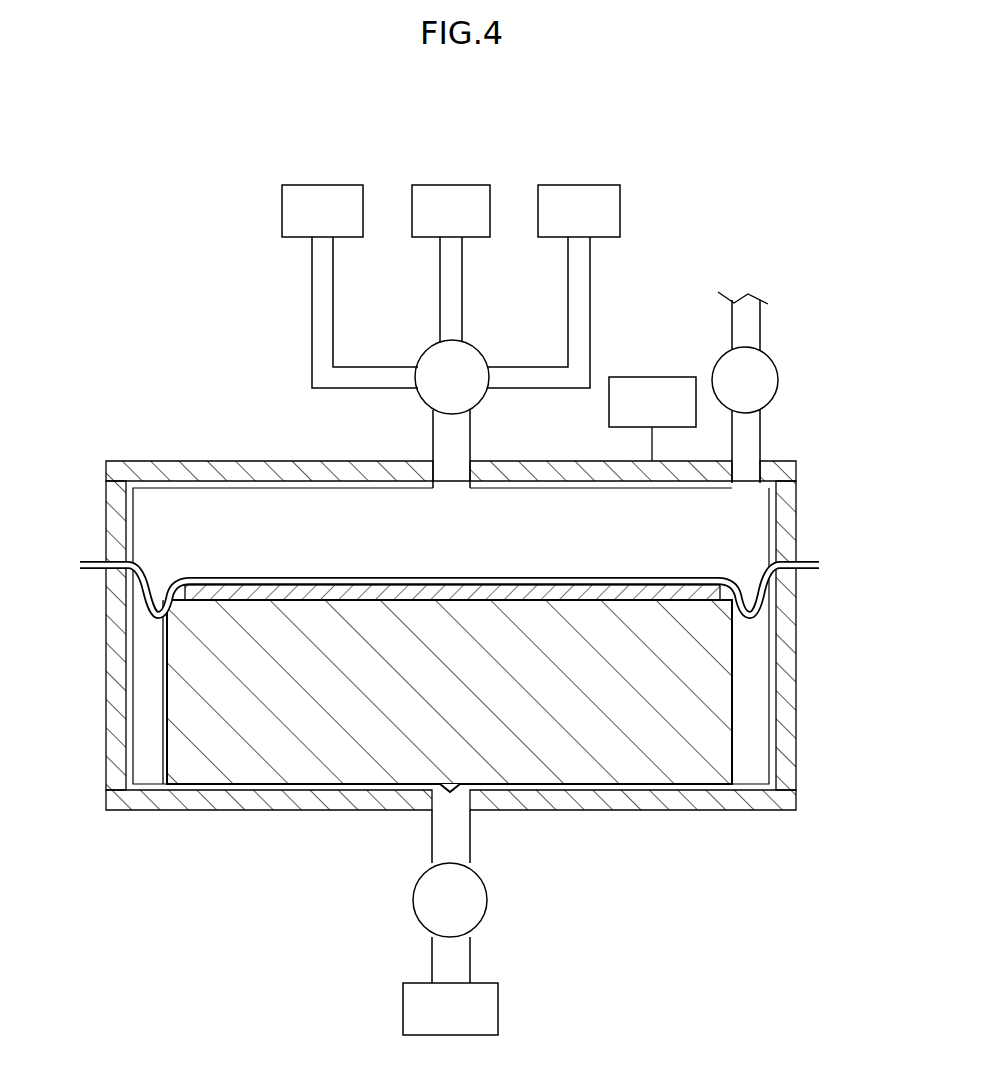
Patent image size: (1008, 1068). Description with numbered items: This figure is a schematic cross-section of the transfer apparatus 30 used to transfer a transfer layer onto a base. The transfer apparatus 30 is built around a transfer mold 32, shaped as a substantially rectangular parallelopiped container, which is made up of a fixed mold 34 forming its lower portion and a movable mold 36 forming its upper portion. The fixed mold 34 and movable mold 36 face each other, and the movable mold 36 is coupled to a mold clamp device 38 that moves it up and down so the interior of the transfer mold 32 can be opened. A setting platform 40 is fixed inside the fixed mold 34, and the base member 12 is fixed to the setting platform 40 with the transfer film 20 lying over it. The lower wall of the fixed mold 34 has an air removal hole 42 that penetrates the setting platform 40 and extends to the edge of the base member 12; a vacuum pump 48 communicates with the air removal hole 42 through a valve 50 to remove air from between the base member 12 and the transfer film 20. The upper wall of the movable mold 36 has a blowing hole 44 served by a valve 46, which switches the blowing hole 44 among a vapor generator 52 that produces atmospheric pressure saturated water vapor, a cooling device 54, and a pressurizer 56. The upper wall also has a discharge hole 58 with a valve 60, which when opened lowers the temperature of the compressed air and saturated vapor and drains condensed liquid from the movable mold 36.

The base member 12 is at (700, 608).
The transfer film 20 is at (808, 555).
The transfer apparatus 30 is at (166, 218).
The transfer mold 32 is at (106, 458).
The fixed mold 34 is at (183, 812).
The movable mold 36 is at (245, 460).
The mold clamp device 38 is at (658, 376).
The setting platform 40 is at (318, 770).
The air removal hole 42 is at (456, 790).
The blowing hole 44 is at (440, 465).
The valve 46 is at (416, 352).
The vacuum pump 48 is at (398, 1010).
The valve 50 is at (488, 906).
The vapor generator 52 is at (322, 178).
The cooling device 54 is at (451, 178).
The pressurizer 56 is at (583, 178).
The discharge hole 58 is at (744, 470).
The valve 60 is at (776, 362).